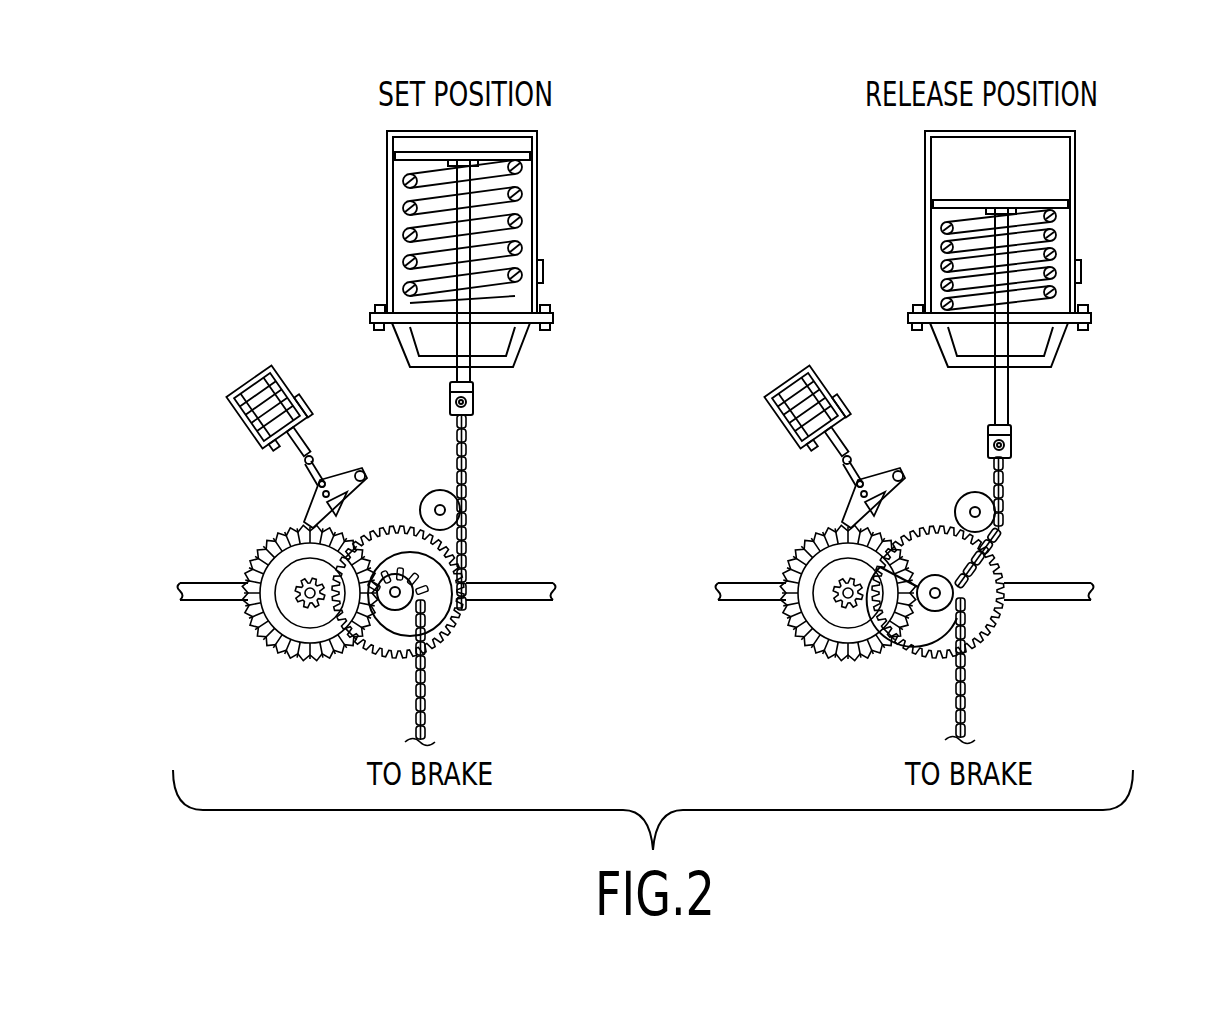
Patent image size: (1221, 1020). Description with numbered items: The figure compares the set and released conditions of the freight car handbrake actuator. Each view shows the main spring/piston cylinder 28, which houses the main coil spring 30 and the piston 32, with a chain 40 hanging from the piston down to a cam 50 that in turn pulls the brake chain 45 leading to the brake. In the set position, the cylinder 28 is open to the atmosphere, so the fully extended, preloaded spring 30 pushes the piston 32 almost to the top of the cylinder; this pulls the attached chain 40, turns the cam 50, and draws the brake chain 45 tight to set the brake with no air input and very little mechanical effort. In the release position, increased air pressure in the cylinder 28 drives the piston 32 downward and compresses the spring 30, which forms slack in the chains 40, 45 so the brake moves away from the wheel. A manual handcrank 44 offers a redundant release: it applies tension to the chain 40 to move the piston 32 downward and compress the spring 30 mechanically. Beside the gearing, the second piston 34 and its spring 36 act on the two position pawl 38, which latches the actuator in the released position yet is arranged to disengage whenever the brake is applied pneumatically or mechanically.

The main spring/piston cylinder 28 is at (575, 172).
The main coil spring 30 is at (533, 218).
The piston 32 is at (395, 155).
The second piston 34 is at (218, 424).
The spring 36 is at (276, 381).
The two position pawl 38 is at (349, 470).
The chain 40 is at (468, 470).
The manual handcrank 44 is at (525, 583).
The brake chain 45 is at (430, 683).
The cam 50 is at (416, 603).